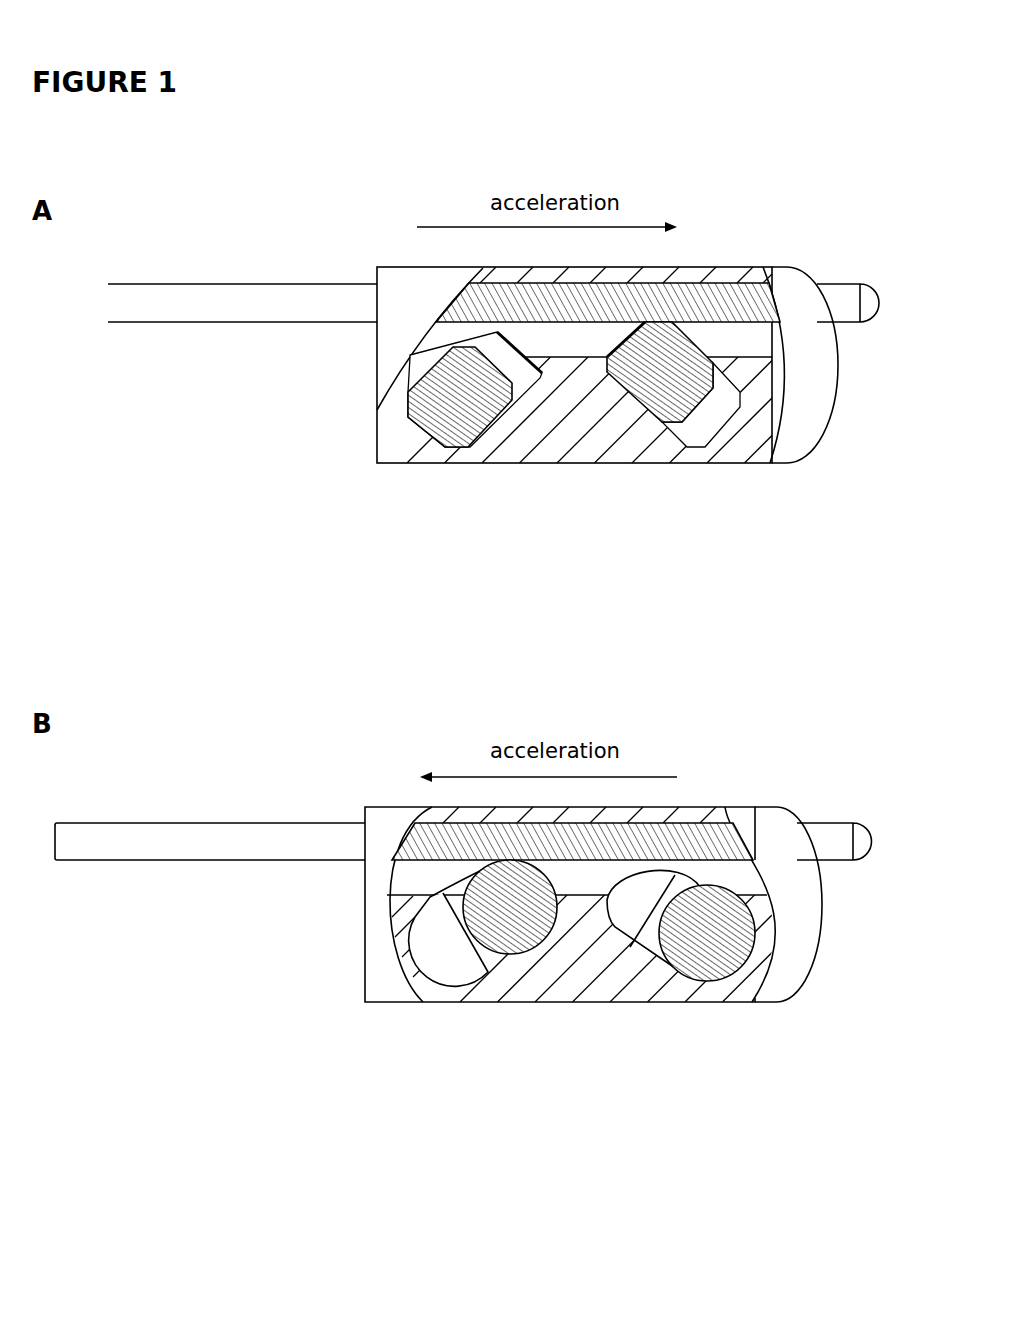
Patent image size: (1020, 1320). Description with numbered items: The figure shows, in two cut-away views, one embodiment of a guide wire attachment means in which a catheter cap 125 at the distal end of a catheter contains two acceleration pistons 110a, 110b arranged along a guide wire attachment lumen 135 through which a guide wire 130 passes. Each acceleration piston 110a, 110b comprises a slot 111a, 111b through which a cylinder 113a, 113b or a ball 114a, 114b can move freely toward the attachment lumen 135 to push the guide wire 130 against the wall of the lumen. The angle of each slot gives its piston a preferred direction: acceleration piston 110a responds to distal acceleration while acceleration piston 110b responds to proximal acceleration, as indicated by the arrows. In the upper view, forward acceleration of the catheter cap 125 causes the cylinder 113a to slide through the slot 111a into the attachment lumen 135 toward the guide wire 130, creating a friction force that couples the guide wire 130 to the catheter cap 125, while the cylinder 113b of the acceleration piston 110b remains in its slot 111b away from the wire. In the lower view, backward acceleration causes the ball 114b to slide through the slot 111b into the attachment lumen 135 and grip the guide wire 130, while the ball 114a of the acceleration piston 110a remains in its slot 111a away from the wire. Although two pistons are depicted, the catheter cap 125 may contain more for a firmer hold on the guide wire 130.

In FIG. 1A, the acceleration piston 110a is at (661, 470).
In FIG. 1B, the acceleration piston 110a is at (674, 1008).
In FIG. 1A, the acceleration piston 110b is at (462, 475).
In FIG. 1B, the acceleration piston 110b is at (470, 1011).
In FIG. 1A, the slot 111a is at (713, 425).
In FIG. 1B, the slot 111a is at (632, 917).
In FIG. 1A, the slot 111b is at (517, 367).
In FIG. 1B, the slot 111b is at (435, 953).
In FIG. 1A, the cylinder 113a is at (640, 378).
In FIG. 1A, the cylinder 113b is at (438, 403).
In FIG. 1B, the ball 114a is at (723, 953).
In FIG. 1B, the ball 114b is at (512, 917).
In FIG. 1A, the catheter cap 125 is at (733, 255).
In FIG. 1B, the catheter cap 125 is at (732, 783).
In FIG. 1A, the guide wire 130 is at (218, 312).
In FIG. 1B, the guide wire 130 is at (243, 842).
In FIG. 1A, the guide wire attachment lumen 135 is at (438, 340).
In FIG. 1B, the guide wire attachment lumen 135 is at (420, 878).